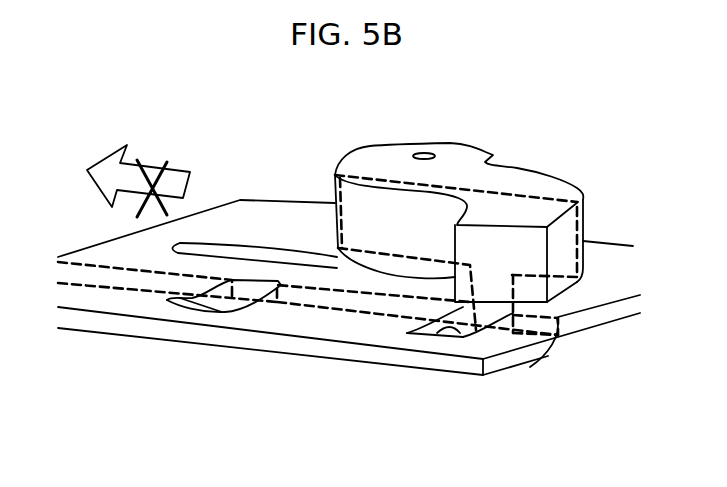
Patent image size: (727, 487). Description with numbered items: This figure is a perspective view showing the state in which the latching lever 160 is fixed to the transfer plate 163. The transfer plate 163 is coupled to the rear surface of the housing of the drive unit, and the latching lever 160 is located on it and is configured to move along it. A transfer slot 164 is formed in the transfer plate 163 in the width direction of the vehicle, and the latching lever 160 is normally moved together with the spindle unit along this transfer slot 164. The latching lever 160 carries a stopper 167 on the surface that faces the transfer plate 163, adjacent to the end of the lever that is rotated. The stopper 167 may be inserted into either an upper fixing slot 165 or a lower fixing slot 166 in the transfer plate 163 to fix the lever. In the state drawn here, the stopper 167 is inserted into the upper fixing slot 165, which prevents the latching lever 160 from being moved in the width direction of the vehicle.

The latching lever 160 is at (527, 170).
The transfer plate 163 is at (270, 213).
The transfer slot 164 is at (240, 253).
The upper fixing slot 165 is at (462, 340).
The lower fixing slot 166 is at (168, 300).
The stopper 167 is at (492, 312).